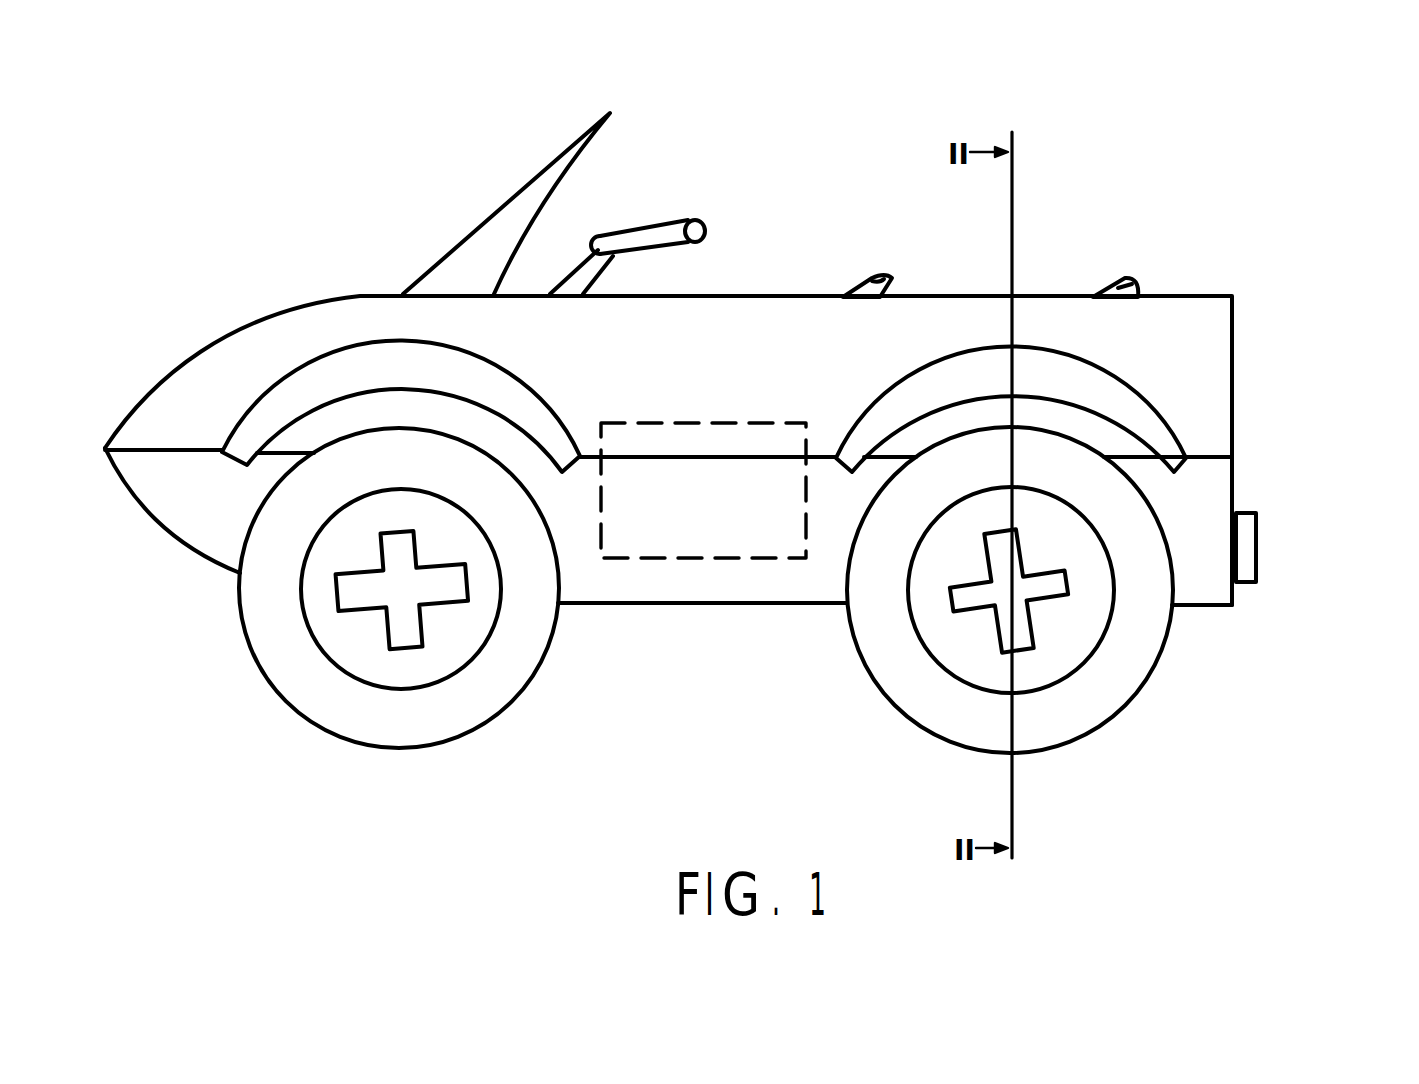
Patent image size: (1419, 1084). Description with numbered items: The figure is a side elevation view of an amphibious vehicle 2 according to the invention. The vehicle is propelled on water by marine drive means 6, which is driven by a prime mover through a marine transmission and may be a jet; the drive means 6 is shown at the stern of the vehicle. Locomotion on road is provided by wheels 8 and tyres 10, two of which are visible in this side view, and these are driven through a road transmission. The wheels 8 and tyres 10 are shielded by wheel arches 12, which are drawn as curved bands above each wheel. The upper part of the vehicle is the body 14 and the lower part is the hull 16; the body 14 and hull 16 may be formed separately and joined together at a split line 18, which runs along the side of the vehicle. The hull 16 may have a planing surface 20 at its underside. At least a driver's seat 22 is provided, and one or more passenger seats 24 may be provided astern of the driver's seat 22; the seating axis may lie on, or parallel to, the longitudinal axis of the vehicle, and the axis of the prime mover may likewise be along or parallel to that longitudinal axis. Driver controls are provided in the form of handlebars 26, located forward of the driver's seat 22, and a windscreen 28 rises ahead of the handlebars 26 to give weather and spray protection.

The amphibious vehicle 2 is at (1032, 146).
The marine drive means 6 is at (1245, 552).
The wheels 8 is at (470, 612).
The tyres 10 is at (485, 688).
The wheel arches 12 is at (335, 373).
The body 14 is at (1217, 336).
The hull 16 is at (1212, 490).
The split line 18 is at (1233, 460).
The planing surface 20 is at (1197, 610).
The driver's seat 22 is at (888, 273).
The passenger seat 24 is at (1137, 290).
The handlebars 26 is at (645, 237).
The windscreen 28 is at (517, 212).